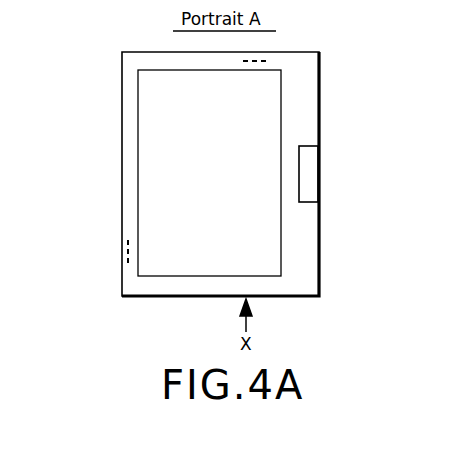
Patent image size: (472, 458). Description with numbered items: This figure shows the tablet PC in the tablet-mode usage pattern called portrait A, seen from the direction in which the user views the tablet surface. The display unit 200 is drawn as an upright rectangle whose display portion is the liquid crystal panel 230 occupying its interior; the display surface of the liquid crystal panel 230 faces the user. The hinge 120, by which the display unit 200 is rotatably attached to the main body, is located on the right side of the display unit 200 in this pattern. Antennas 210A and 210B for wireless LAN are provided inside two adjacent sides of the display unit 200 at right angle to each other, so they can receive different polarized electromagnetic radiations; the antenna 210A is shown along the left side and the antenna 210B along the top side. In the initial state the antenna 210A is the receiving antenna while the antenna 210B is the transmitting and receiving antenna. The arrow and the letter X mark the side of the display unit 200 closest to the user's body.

The display unit 200 is at (110, 115).
The liquid crystal panel 230 is at (273, 234).
The hinge 120 is at (308, 167).
The antenna 210A is at (121, 253).
The antenna 210B is at (258, 60).